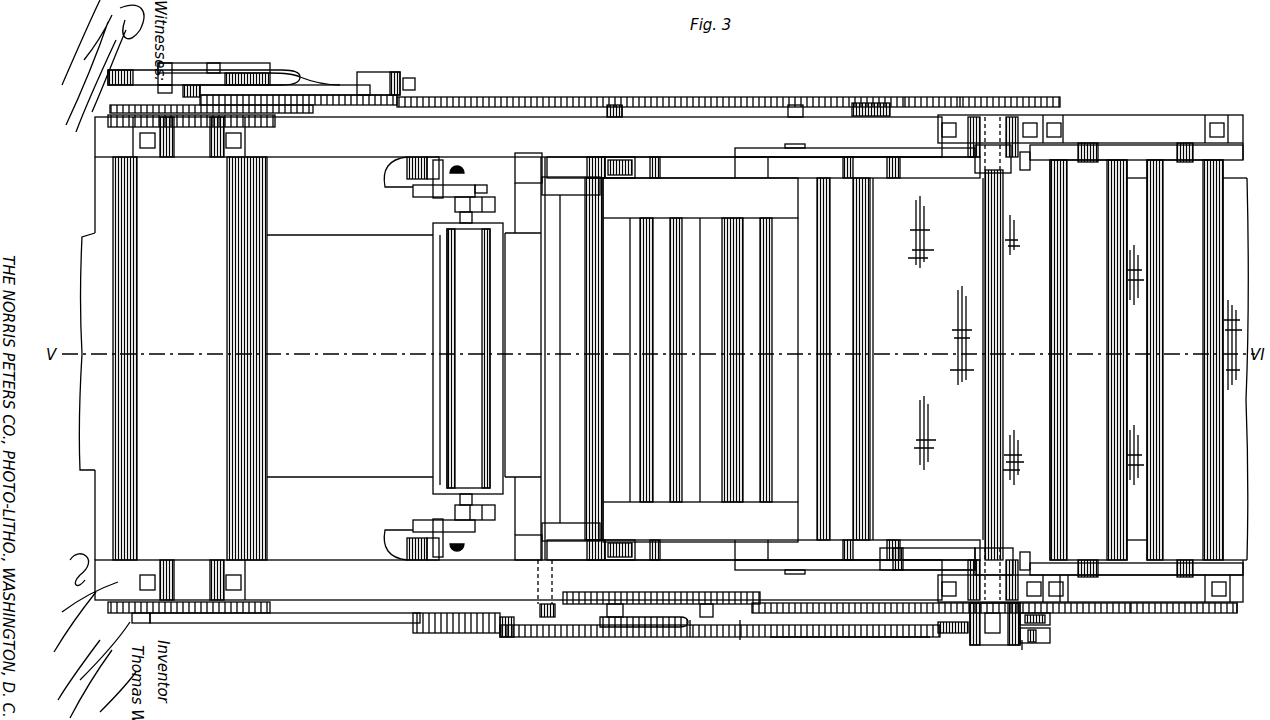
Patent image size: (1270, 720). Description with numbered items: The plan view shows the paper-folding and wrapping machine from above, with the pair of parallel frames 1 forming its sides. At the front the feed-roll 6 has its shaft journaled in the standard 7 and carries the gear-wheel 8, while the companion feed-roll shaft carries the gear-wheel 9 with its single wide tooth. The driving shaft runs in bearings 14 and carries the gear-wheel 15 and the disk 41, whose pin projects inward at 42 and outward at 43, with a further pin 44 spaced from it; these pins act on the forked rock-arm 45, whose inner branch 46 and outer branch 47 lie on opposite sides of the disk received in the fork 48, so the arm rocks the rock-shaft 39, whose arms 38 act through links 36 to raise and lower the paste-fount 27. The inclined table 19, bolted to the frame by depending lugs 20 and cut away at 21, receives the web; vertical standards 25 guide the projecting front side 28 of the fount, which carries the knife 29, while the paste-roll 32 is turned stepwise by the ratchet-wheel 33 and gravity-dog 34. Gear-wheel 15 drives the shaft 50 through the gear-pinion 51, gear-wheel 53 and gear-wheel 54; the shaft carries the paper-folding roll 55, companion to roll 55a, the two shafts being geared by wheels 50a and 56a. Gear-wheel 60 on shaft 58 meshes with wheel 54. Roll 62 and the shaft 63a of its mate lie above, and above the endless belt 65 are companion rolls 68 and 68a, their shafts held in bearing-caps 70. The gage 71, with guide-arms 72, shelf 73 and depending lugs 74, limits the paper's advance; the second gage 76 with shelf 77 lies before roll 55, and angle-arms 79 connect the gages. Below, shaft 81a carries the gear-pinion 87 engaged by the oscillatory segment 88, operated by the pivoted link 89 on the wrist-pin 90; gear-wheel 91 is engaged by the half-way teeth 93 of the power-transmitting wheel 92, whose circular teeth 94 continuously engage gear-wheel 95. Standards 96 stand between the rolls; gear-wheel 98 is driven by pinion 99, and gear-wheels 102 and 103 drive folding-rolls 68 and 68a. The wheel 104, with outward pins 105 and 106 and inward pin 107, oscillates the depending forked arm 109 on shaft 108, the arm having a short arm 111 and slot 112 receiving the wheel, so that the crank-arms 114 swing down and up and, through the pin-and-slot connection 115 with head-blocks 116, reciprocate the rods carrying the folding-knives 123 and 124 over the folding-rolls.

The parallel frames 1 is at (362, 146).
The feed-roll 6 is at (173, 358).
The standard 7 is at (192, 358).
The gear-wheel 8 is at (120, 118).
The gear-wheel 9 is at (230, 614).
The bearings 14 is at (350, 500).
The gear-wheel 15 is at (280, 127).
The inclined plane or table 19 is at (350, 210).
The depending lugs 20 is at (528, 356).
The cut-away portion 21 is at (392, 183).
The vertical standards 25 is at (422, 197).
The paste-fount 27 is at (523, 359).
The front side of paste-fount 28 is at (438, 296).
The knife 29 is at (433, 393).
The paste-roll 32 is at (468, 358).
The ratchet-wheel 33 is at (495, 206).
The gravity-dog 34 is at (487, 185).
The links 36 is at (457, 166).
The arms 38 is at (423, 358).
The rock-shaft 39 is at (382, 72).
The disk 41 is at (128, 72).
The inwardly-projecting pin 42 is at (158, 89).
The outwardly-projecting pin 43 is at (165, 63).
The outwardly-projecting pin 44 is at (215, 63).
The forked rock-arm 45 is at (345, 94).
The inner branch 46 is at (305, 85).
The outer branch 47 is at (255, 73).
The fork 48 is at (290, 72).
The shaft 50 is at (620, 105).
The gear-wheel 50a is at (605, 592).
The gear-pinion 51 is at (300, 113).
The gear-wheel 53 is at (478, 97).
The gear-wheel 54 is at (595, 97).
The paper-folding roll 55 is at (588, 418).
The companion folding roll 55a is at (731, 360).
The gear-wheel 56a is at (705, 604).
The shaft 58 is at (790, 105).
The gear-wheel 60 is at (858, 103).
The roll 62 is at (828, 359).
The shaft 63a is at (903, 552).
The endless belt or apron 65 is at (945, 333).
The roll 68 is at (1097, 360).
The companion roll 68a is at (1187, 360).
The bearing-caps 70 is at (1092, 358).
The gage 71 is at (621, 360).
The longitudinal guide-arms 72 is at (652, 178).
The shelf 73 is at (646, 360).
The depending lugs 74 is at (620, 158).
The second gage 76 is at (545, 337).
The horizontal shelf 77 is at (563, 359).
The angle-arms 79 is at (571, 359).
The shaft 81a is at (980, 609).
The gear-pinion 87 is at (741, 641).
The oscillatory segment 88 is at (628, 637).
The pivoted link 89 is at (366, 624).
The wrist-pin 90 is at (145, 623).
The gear-wheel 91 is at (688, 638).
The power-transmitting wheel 92 is at (456, 636).
The series of teeth 93 is at (500, 625).
The circular series of teeth 94 is at (535, 637).
The gear-wheel 95 is at (793, 638).
The standards 96 is at (999, 358).
The gear-wheel 98 is at (960, 107).
The pinion 99 is at (905, 97).
The gear-wheel 102 is at (1118, 613).
The gear 103 is at (1203, 613).
The wheel 104 is at (953, 634).
The pin 105 is at (1033, 643).
The second pin 106 is at (1050, 638).
The pin 107 is at (1050, 620).
The shaft 108 is at (1003, 333).
The depending forked arm 109 is at (1000, 645).
The short arm 111 is at (1060, 603).
The slot 112 is at (1022, 651).
The crank-arms 114 is at (835, 148).
The pin-and-slot connection 115 is at (790, 144).
The head-blocks 116 is at (751, 358).
The folding-knife 123 is at (665, 394).
The folding-knife 124 is at (848, 394).